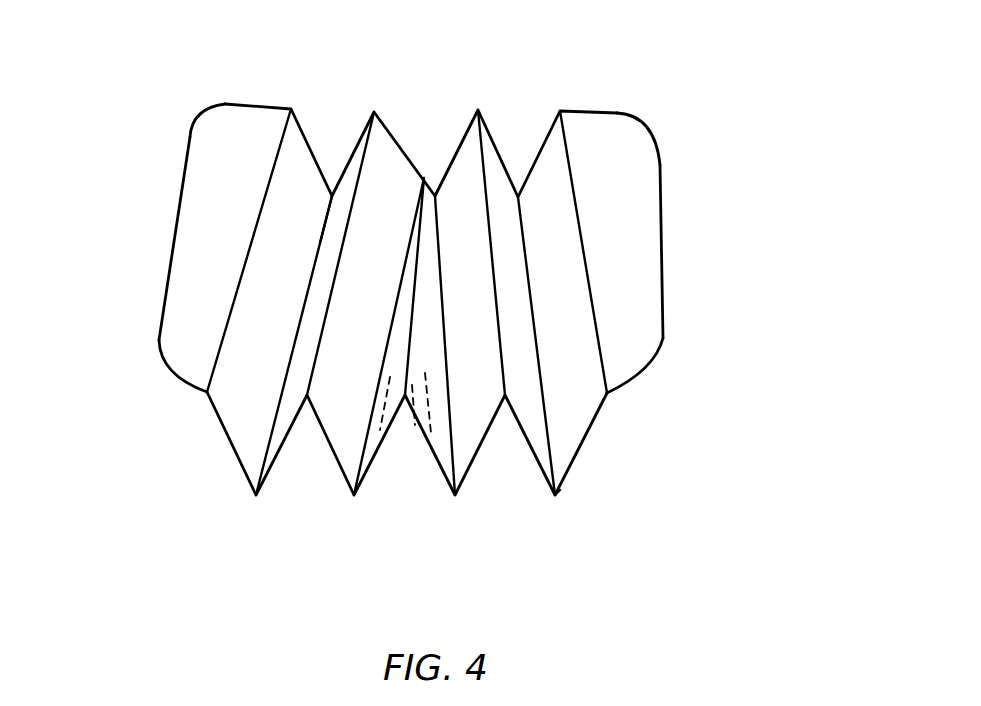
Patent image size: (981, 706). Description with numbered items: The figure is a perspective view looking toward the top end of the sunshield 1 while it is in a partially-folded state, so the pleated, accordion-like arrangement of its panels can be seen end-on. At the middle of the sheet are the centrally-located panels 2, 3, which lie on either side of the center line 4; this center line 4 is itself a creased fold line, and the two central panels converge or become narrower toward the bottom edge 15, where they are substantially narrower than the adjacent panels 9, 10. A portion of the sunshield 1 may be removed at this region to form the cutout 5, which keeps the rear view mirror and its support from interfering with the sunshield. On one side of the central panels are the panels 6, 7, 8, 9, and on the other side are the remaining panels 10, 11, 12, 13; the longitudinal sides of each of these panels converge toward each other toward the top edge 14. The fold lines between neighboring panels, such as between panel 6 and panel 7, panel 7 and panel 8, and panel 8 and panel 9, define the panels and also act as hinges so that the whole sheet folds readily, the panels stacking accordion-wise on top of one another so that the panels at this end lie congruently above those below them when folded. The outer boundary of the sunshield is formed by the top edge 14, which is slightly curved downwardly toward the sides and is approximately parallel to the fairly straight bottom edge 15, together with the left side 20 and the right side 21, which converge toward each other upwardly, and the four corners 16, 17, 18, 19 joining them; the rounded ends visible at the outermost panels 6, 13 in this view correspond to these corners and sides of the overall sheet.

The sunshield 1 is at (367, 52).
The panel 2 is at (424, 370).
The panel 3 is at (409, 360).
The center line 4 is at (417, 247).
The cutout 5 is at (415, 425).
The panel 6 is at (622, 223).
The panel 7 is at (560, 223).
The panel 8 is at (512, 223).
The panel 9 is at (466, 223).
The panel 10 is at (385, 247).
The panel 11 is at (342, 203).
The panel 12 is at (303, 227).
The panel 13 is at (230, 227).
The top edge 14 is at (573, 518).
The bottom edge 15 is at (497, 97).
The corner 16 is at (670, 123).
The corner 17 is at (210, 88).
The corner 18 is at (658, 372).
The corner 19 is at (158, 365).
The left side 20 is at (685, 242).
The right side 21 is at (152, 233).